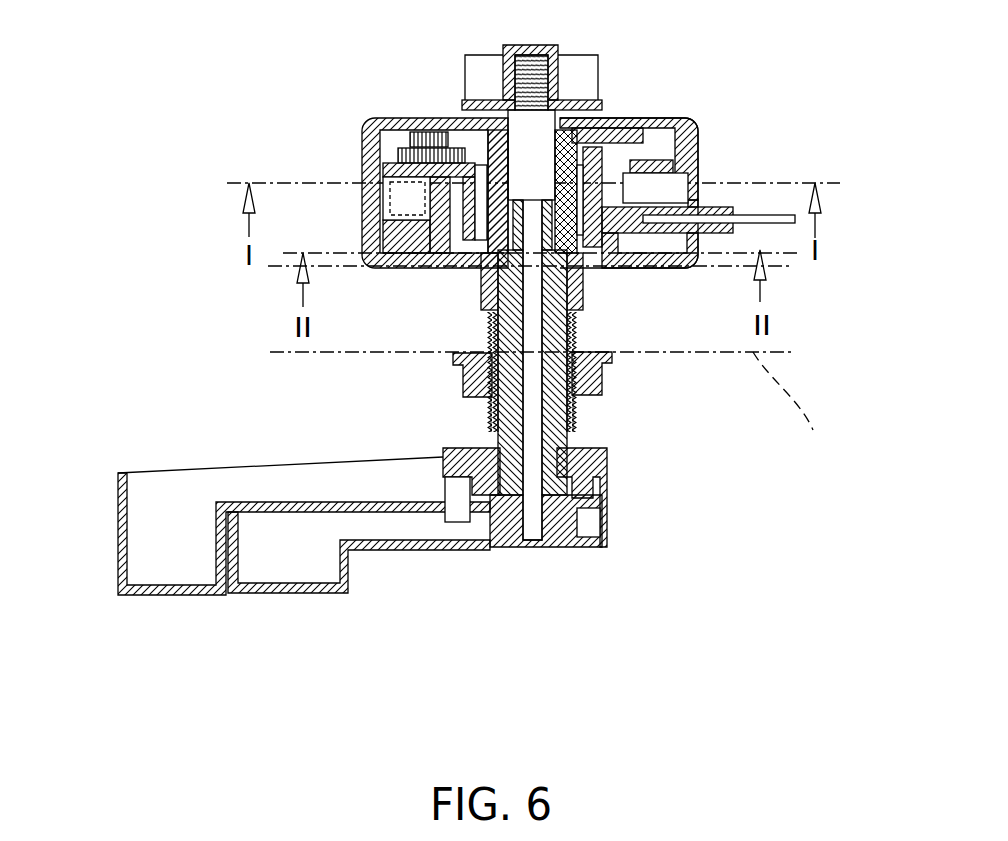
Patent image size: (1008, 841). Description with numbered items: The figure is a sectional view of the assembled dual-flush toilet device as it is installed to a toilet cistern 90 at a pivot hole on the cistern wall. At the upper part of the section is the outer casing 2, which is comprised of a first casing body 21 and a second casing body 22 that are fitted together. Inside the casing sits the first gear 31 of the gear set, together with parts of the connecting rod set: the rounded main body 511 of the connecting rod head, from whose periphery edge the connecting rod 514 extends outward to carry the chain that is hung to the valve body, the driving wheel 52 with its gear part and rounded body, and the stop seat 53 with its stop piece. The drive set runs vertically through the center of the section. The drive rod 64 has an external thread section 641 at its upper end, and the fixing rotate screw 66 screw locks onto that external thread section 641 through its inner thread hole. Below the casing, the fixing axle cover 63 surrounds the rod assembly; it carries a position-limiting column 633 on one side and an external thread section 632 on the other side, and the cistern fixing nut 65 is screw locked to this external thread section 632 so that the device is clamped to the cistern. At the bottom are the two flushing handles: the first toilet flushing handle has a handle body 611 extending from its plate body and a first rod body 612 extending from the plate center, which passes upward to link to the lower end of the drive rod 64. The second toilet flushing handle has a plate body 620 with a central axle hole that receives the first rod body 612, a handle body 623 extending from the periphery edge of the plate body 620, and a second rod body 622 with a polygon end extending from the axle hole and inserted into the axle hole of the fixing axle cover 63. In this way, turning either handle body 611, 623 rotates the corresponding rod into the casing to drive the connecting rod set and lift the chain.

The outer casing 2 is at (355, 168).
The first casing body 21 is at (695, 155).
The second casing body 22 is at (648, 262).
The first gear 31 is at (620, 128).
The rounded main body 511 is at (640, 158).
The connecting rod 514 is at (760, 218).
The driving wheel 52 is at (597, 178).
The stop seat 53 is at (587, 267).
The drive rod 64 is at (517, 125).
The external thread section 641 is at (555, 57).
The fixing rotate screw 66 is at (603, 75).
The cistern fixing nut 65 is at (603, 377).
The fixing axle cover 63 is at (462, 448).
The position-limiting column 633 is at (453, 495).
The external thread section 632 is at (575, 410).
The first rod body 612 is at (577, 427).
The plate body 620 is at (600, 508).
The second rod body 622 is at (483, 262).
The handle body 623 is at (120, 560).
The handle body 611 is at (283, 587).
The toilet cistern 90 is at (791, 410).